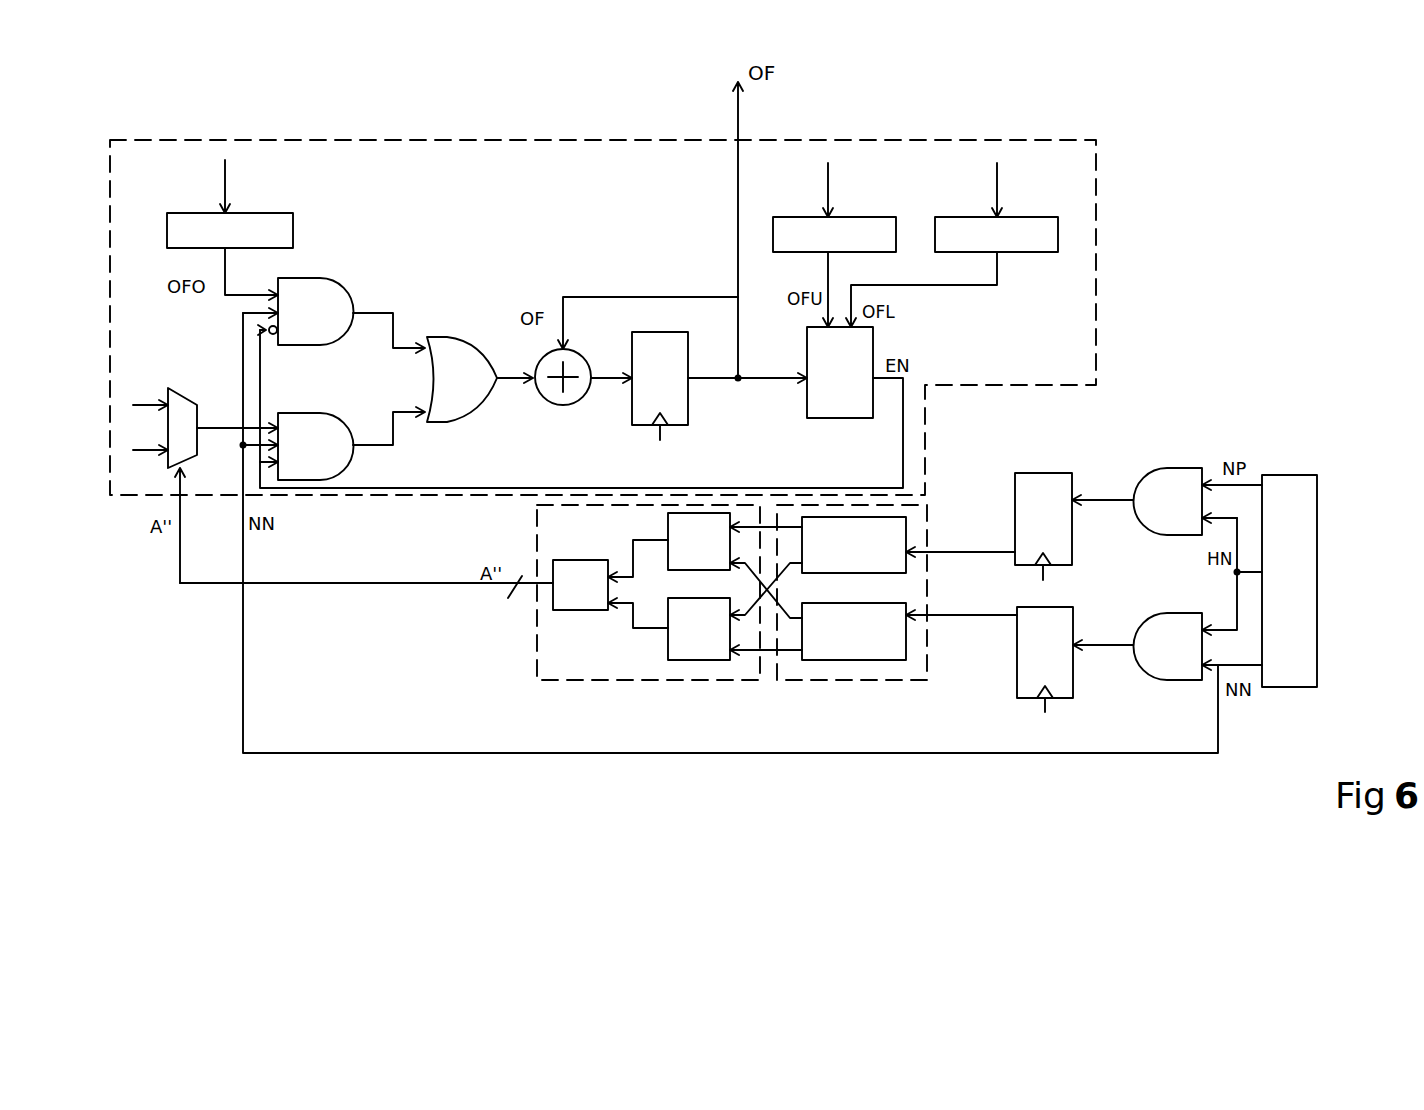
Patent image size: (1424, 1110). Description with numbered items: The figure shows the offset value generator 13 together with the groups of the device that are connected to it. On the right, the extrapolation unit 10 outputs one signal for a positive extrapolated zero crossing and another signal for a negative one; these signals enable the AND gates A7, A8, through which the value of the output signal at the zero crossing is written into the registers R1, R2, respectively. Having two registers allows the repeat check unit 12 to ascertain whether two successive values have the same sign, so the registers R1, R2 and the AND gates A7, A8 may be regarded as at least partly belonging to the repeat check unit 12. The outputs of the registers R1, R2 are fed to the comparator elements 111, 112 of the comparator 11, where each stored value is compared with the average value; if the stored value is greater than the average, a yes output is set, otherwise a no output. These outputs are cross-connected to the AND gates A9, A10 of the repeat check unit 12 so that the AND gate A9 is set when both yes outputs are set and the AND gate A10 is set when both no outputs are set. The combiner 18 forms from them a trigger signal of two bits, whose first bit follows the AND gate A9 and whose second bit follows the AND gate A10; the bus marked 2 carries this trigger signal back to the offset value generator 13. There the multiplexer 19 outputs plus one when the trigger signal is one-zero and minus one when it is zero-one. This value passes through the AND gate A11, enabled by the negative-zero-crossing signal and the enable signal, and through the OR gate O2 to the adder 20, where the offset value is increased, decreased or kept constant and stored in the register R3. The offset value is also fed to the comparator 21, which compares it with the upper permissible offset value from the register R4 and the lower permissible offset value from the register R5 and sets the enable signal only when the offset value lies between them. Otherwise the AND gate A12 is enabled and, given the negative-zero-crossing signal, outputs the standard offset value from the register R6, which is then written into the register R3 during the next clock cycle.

The offset value generator 13 is at (1103, 160).
The register R6 is at (283, 214).
The AND gate A12 is at (338, 278).
The AND gate A11 is at (318, 413).
The multiplexer 19 is at (181, 388).
The OR gate O2 is at (478, 418).
The adder 20 is at (562, 406).
The register R3 is at (719, 386).
The register R4 is at (866, 216).
The register R5 is at (1030, 216).
The comparator 21 is at (830, 418).
The repeat check unit 12 is at (597, 680).
The comparator 11 is at (915, 680).
The combiner 18 is at (572, 610).
The AND gate A9 is at (667, 528).
The AND gate A10 is at (668, 658).
The comparator element 111 is at (906, 527).
The comparator element 112 is at (906, 645).
The register R1 is at (1074, 526).
The register R2 is at (1075, 659).
The AND gate A7 is at (1173, 468).
The AND gate A8 is at (1171, 613).
The extrapolation unit 10 is at (1317, 622).
The two-bit bus 2 is at (366, 600).